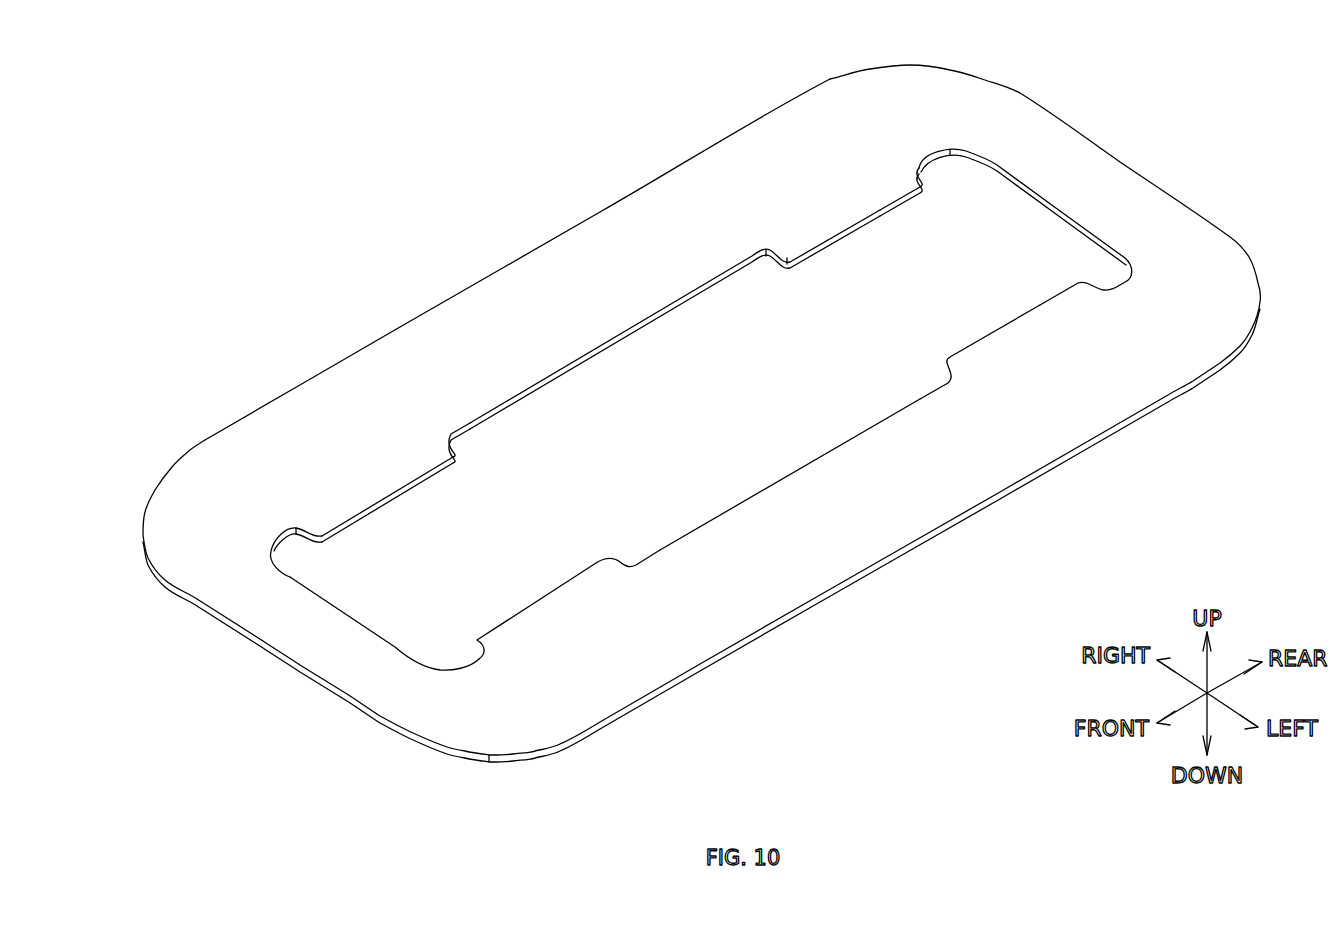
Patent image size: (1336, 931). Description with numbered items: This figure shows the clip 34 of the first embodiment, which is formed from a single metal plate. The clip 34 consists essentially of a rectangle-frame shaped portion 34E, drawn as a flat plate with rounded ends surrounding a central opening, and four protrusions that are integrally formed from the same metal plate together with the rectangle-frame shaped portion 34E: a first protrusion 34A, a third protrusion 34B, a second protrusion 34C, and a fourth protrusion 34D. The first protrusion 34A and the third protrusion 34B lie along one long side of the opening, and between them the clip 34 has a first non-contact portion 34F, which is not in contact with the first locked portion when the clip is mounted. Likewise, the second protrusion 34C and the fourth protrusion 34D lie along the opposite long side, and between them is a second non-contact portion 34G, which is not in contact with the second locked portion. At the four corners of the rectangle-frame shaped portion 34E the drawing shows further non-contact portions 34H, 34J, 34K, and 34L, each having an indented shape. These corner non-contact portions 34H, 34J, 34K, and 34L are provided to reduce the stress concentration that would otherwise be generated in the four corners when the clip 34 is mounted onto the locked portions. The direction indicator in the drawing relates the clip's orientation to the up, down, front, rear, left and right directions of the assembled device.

The clip 34 is at (487, 230).
The first protrusion 34A is at (846, 216).
The third protrusion 34B is at (405, 484).
The second protrusion 34C is at (1008, 340).
The fourth protrusion 34D is at (557, 607).
The rectangle-frame shaped portion 34E is at (673, 208).
The first non-contact portion 34F is at (596, 347).
The second non-contact portion 34G is at (796, 470).
The non-contact portion 34H is at (942, 160).
The non-contact portion 34J is at (292, 553).
The non-contact portion 34K is at (1113, 247).
The non-contact portion 34L is at (473, 662).